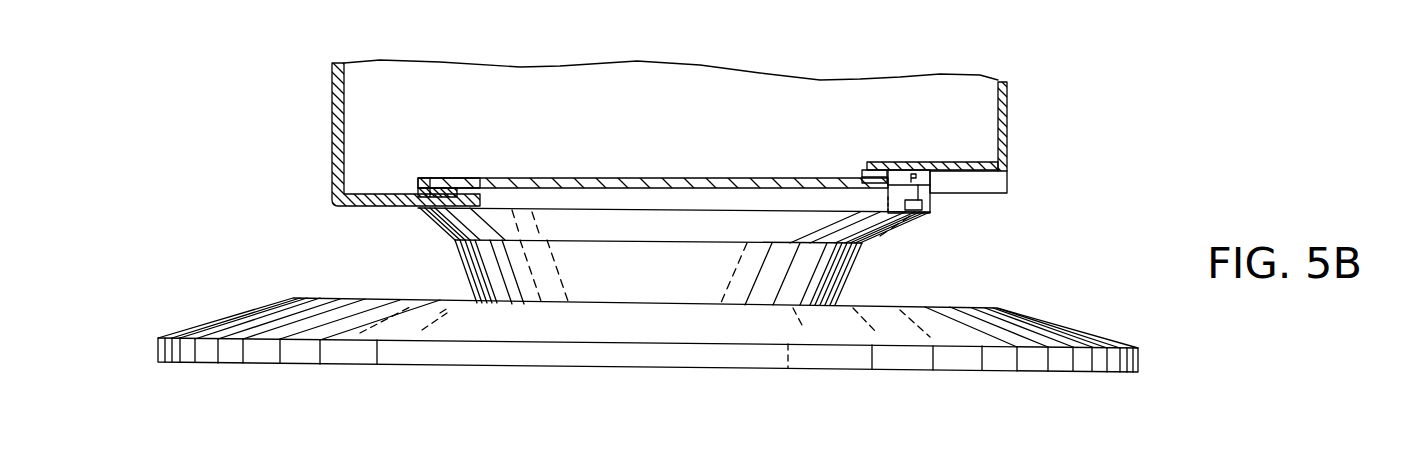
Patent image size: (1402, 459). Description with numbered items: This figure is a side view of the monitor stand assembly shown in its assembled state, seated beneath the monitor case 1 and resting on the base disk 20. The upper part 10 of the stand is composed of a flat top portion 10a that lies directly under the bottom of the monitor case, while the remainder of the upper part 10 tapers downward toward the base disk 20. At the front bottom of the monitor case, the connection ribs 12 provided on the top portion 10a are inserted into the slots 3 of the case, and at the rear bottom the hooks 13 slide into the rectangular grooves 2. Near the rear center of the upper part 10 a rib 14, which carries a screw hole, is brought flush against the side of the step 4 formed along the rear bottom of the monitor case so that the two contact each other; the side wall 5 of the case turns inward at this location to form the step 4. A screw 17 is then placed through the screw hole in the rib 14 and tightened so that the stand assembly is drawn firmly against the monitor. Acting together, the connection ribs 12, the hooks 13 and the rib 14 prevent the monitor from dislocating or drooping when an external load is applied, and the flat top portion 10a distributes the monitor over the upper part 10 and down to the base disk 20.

The container body 1 is at (330, 122).
The rectangular grooves 2 is at (890, 170).
The slots 3 is at (413, 188).
The step 4 is at (935, 195).
The side wall 5 is at (1007, 143).
The upper part 10 is at (430, 226).
The flat top portion 10a is at (637, 183).
The connection ribs 12 is at (440, 183).
The hooks 13 is at (860, 170).
The rib 14 is at (927, 170).
The screw 17 is at (918, 215).
The base disk 20 is at (1114, 377).